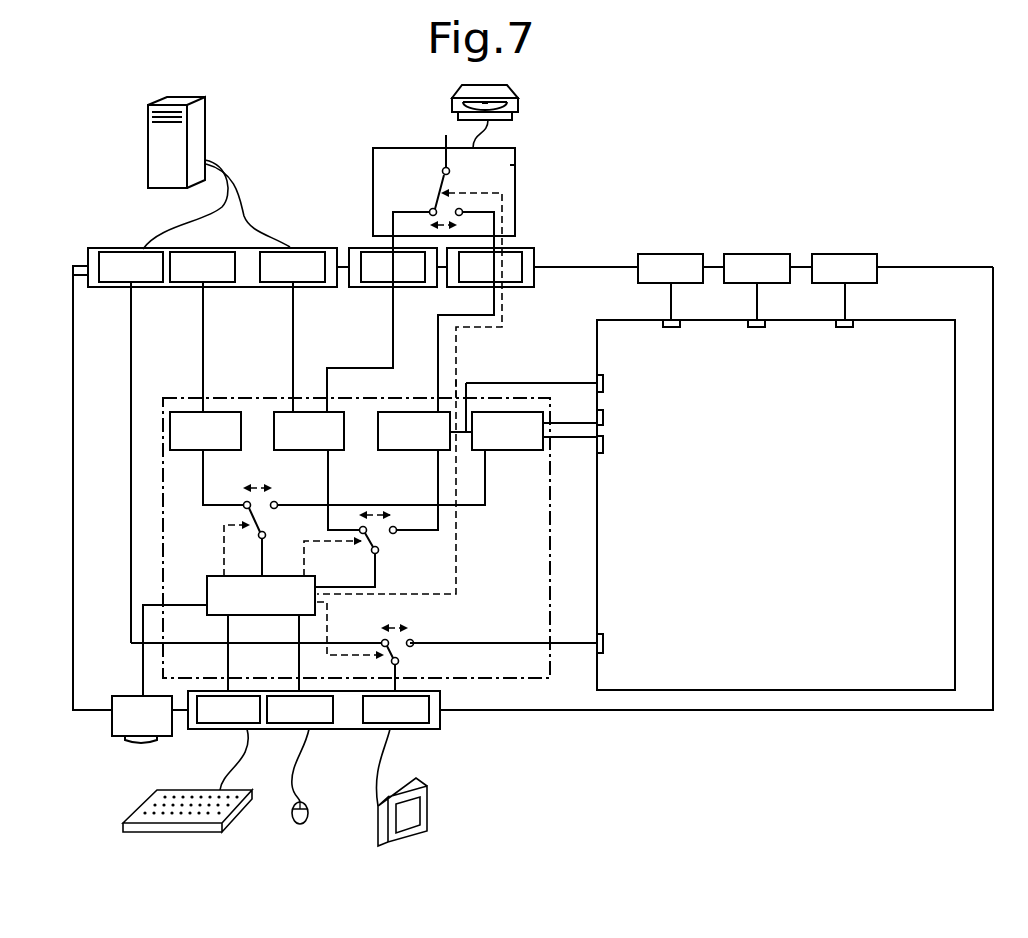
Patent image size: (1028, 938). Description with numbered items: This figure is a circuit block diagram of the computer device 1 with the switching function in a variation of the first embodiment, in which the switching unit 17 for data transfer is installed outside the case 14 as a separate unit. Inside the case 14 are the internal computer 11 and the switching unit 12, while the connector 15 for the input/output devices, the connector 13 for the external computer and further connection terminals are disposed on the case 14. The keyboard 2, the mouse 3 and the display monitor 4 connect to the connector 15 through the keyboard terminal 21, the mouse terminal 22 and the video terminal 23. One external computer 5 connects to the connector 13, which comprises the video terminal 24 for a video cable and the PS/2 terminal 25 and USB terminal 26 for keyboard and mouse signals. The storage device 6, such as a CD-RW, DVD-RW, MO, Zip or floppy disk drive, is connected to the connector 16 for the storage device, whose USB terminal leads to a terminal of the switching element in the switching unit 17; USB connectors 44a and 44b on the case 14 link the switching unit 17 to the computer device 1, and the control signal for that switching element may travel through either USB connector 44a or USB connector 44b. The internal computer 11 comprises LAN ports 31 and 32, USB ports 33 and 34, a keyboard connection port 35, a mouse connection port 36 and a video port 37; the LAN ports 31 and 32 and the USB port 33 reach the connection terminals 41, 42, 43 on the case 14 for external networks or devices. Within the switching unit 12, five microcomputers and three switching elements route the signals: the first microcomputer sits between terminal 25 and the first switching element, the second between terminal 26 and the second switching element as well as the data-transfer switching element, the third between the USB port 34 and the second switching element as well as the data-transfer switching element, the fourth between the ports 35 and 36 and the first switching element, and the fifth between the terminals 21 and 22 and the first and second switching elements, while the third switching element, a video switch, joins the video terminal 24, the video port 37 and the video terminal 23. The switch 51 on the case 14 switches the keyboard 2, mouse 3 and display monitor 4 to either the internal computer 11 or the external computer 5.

The computer device 1 is at (554, 245).
The keyboard 2 is at (140, 806).
The mouse 3 is at (308, 815).
The display monitor 4 is at (427, 805).
The external computer 5 is at (206, 138).
The storage device 6 is at (521, 100).
The internal computer 11 is at (777, 692).
The switching unit 12 is at (163, 475).
The connector for the external computer 13 is at (73, 272).
The case 14 is at (703, 712).
The connector for the input/output devices 15 is at (440, 718).
The connector for the storage device 16 is at (403, 148).
The switching unit for data transfer 17 is at (515, 165).
The keyboard terminal 21 is at (205, 729).
The mouse terminal 22 is at (333, 714).
The video terminal 23 is at (418, 724).
The video terminal 24 is at (126, 250).
The terminal 25 is at (200, 251).
The terminal 26 is at (308, 251).
The LAN port 31 is at (856, 326).
The LAN port 32 is at (768, 326).
The USB port 33 is at (683, 326).
The USB port 34 is at (603, 378).
The keyboard connection port 35 is at (603, 410).
The mouse connection port 36 is at (603, 455).
The video port 37 is at (603, 635).
The connection terminal 41 is at (845, 252).
The connection terminal 42 is at (757, 252).
The connection terminal 43 is at (670, 252).
The USB connector 44a is at (371, 251).
The USB connector 44b is at (520, 250).
The switch for switching operation 51 is at (112, 724).